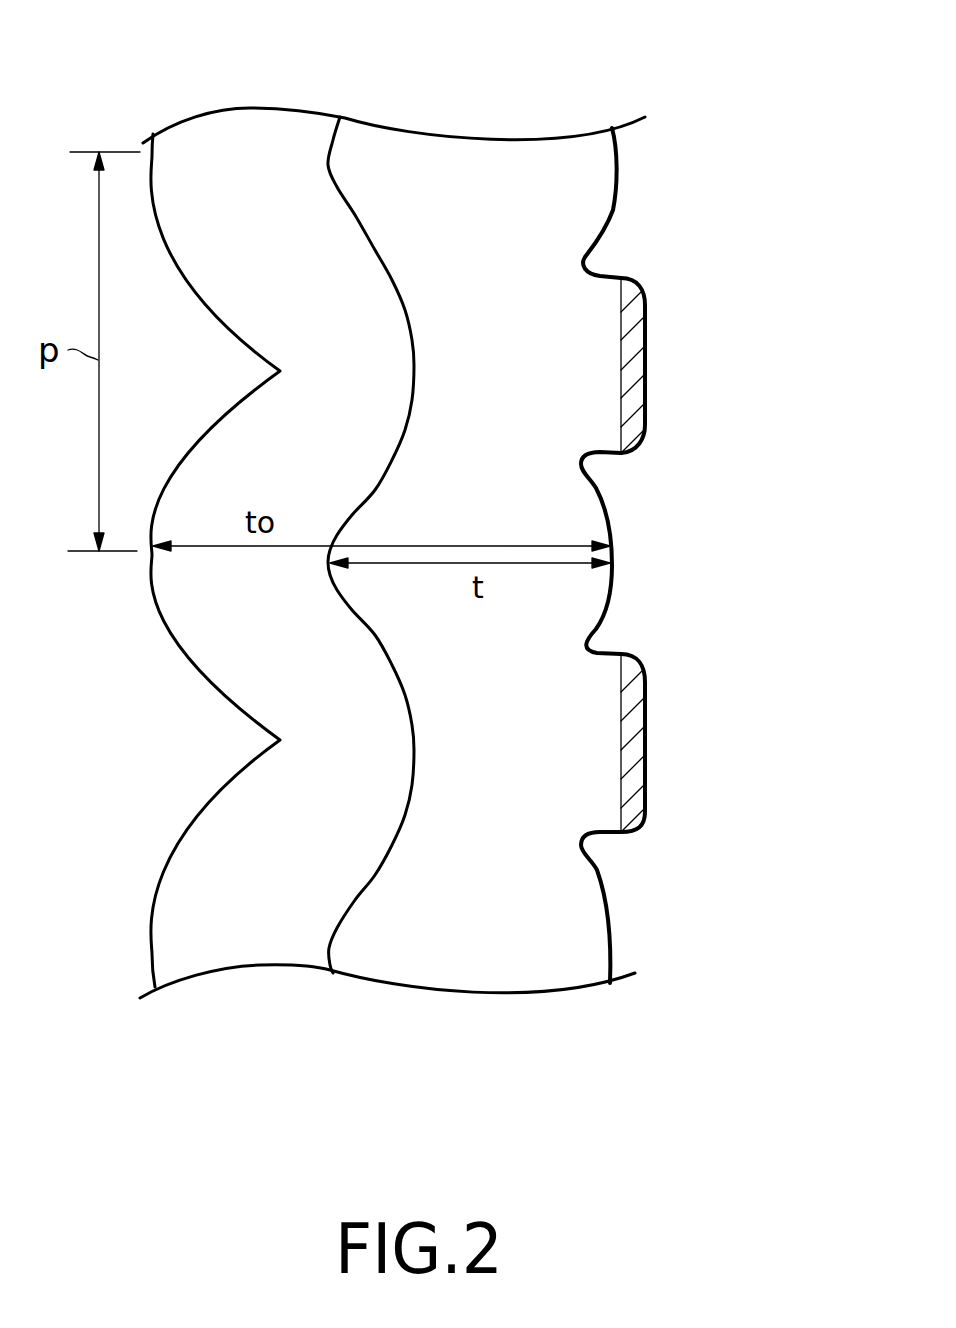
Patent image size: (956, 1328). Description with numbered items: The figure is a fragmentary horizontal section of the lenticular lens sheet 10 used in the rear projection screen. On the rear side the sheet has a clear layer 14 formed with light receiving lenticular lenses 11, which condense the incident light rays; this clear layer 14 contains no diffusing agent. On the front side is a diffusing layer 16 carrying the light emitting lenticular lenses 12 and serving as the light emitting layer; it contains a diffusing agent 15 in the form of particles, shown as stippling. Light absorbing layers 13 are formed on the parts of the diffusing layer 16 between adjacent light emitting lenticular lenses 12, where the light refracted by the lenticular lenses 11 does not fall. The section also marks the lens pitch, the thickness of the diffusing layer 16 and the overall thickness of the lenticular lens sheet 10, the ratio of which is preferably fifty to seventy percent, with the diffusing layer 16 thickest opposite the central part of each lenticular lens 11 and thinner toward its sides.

The lenticular lens sheet 10 is at (565, 100).
The light receiving lenticular lens 11 is at (192, 625).
The light emitting lenticular lens 12 is at (578, 603).
The light absorbing layer 13 is at (647, 365).
The clear layer 14 is at (335, 1015).
The diffusing agent 15 is at (585, 928).
The diffusing layer 16 is at (593, 1015).